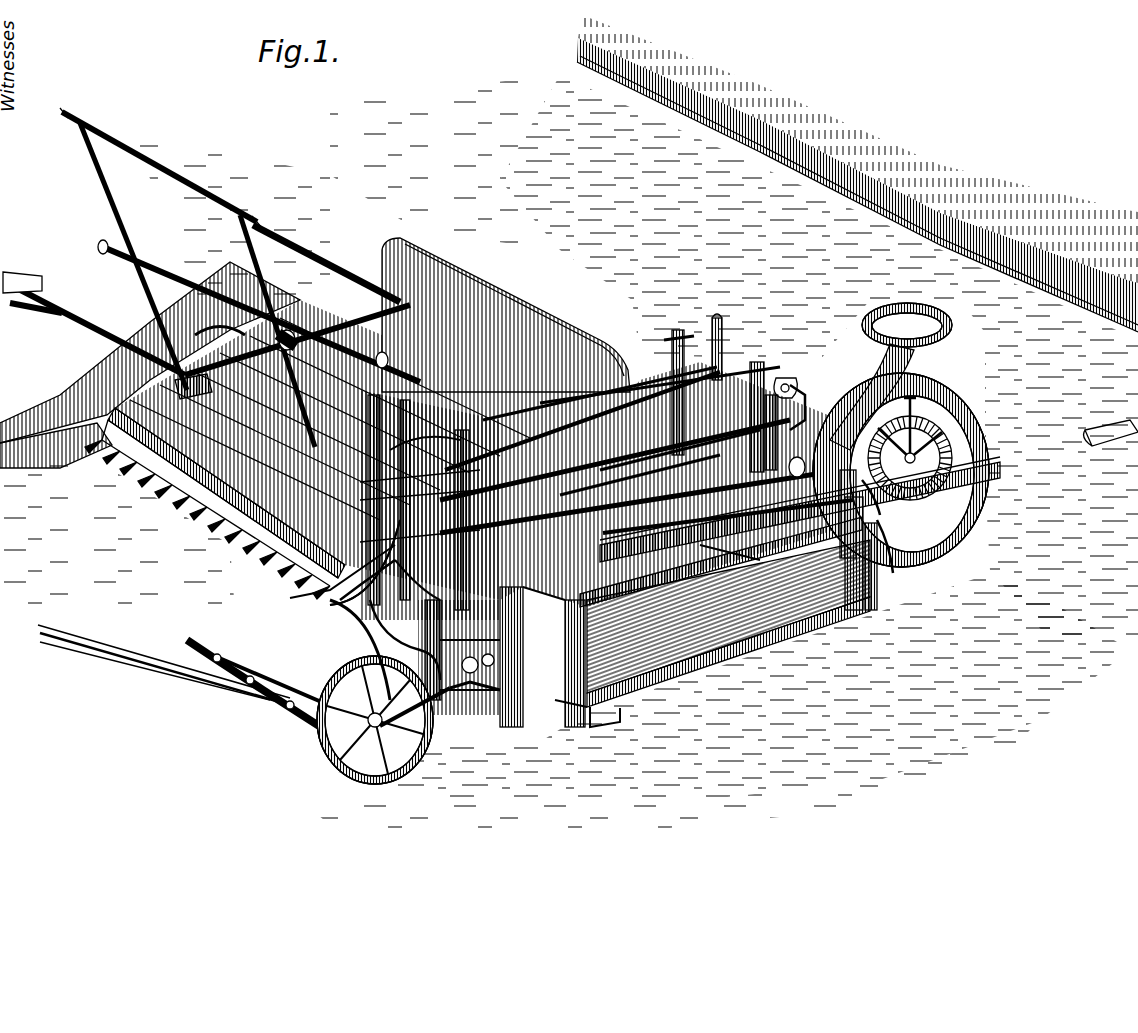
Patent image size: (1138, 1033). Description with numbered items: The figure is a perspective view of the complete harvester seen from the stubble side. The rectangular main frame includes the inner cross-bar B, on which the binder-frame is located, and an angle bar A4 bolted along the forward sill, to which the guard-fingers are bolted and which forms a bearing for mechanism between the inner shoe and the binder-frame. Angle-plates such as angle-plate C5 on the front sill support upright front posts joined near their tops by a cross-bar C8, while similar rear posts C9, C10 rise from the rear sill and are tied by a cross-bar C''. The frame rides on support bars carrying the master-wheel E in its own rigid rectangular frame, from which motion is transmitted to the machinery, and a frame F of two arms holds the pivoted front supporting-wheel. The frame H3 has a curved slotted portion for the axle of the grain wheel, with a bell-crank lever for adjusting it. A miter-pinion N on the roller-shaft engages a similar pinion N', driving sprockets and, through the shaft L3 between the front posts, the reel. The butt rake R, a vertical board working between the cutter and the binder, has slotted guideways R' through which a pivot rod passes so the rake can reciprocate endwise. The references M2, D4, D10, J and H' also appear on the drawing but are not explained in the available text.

The upright post M2 is at (714, 318).
The rear post C10 is at (672, 342).
The cross-bar C'' is at (763, 404).
The slotted guideway R' is at (800, 375).
The rear post C9 is at (796, 400).
The rail D4 is at (680, 449).
The butt rake R is at (640, 471).
The master-wheel E is at (901, 473).
The back board D10 is at (500, 410).
The shaft L3 is at (290, 560).
The cross-bar C8 is at (310, 590).
The angle-plate C5 is at (352, 579).
The frame for the front supporting-wheel F is at (367, 603).
The lever J is at (360, 650).
The tongue H' is at (189, 679).
The frame H3 is at (475, 695).
The miter-pinion N is at (394, 720).
The miter-pinion N' is at (447, 707).
The angle bar A4 is at (600, 720).
The inner cross-bar B is at (630, 712).